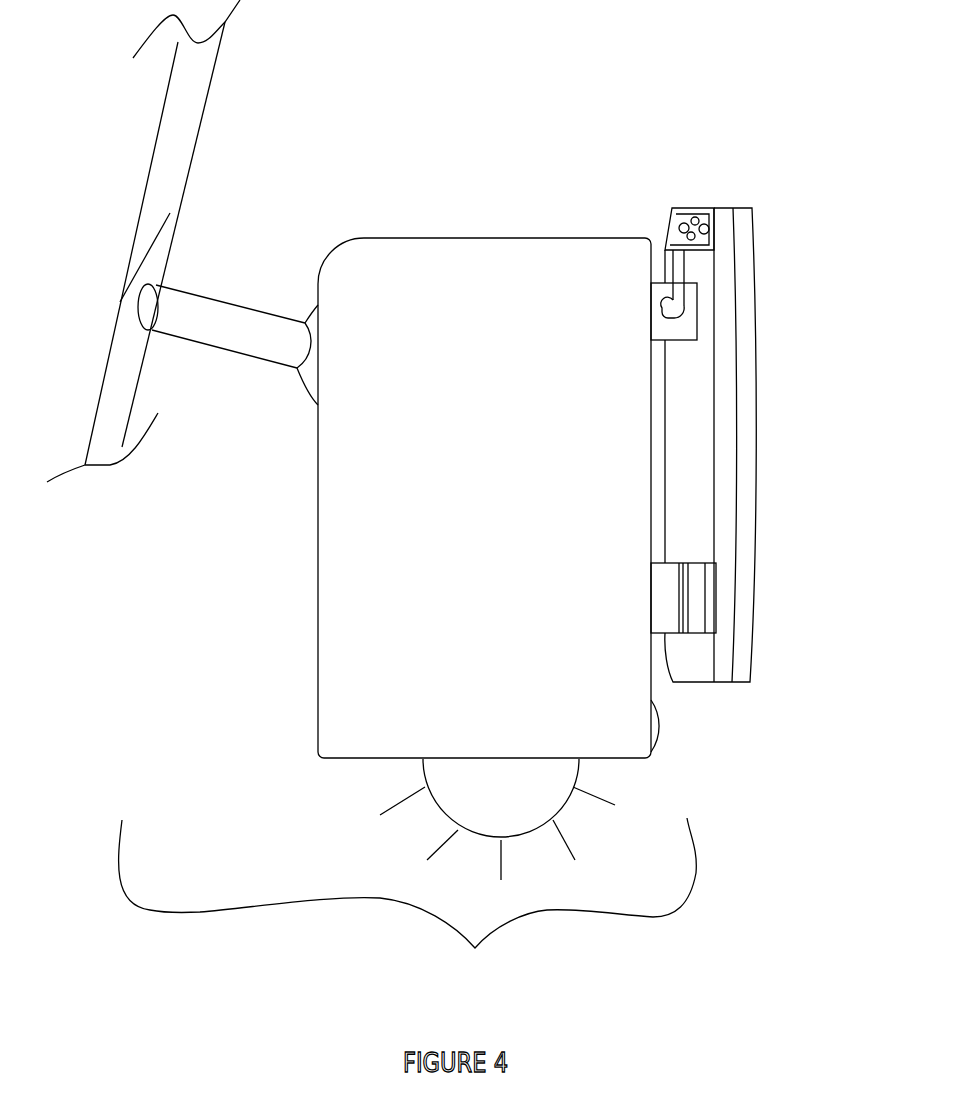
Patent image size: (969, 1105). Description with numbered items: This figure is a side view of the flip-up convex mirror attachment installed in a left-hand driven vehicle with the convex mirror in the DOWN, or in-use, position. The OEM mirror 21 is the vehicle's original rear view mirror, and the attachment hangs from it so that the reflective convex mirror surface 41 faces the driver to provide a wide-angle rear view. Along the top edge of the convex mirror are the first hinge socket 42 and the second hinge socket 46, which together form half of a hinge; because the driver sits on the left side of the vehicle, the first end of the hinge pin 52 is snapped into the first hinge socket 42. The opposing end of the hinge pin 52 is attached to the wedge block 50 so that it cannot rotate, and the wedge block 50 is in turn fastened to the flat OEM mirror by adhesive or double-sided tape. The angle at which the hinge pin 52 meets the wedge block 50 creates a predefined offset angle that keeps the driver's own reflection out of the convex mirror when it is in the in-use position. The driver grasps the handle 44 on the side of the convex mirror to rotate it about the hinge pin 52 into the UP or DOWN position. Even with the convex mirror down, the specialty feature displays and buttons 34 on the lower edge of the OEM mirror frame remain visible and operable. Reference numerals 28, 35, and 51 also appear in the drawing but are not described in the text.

The OEM mirror 21 is at (408, 615).
The support rod 28 is at (121, 298).
The specialty feature displays and buttons 34 is at (658, 722).
The light bulb 35 is at (507, 795).
The reflective convex mirror surface 41 is at (752, 628).
The first hinge socket 42 is at (673, 210).
The handle 44 is at (693, 602).
The second hinge socket 46 is at (712, 210).
The wedge block 50 is at (662, 328).
The cable end 51 is at (664, 311).
The hinge pin 52 is at (682, 292).